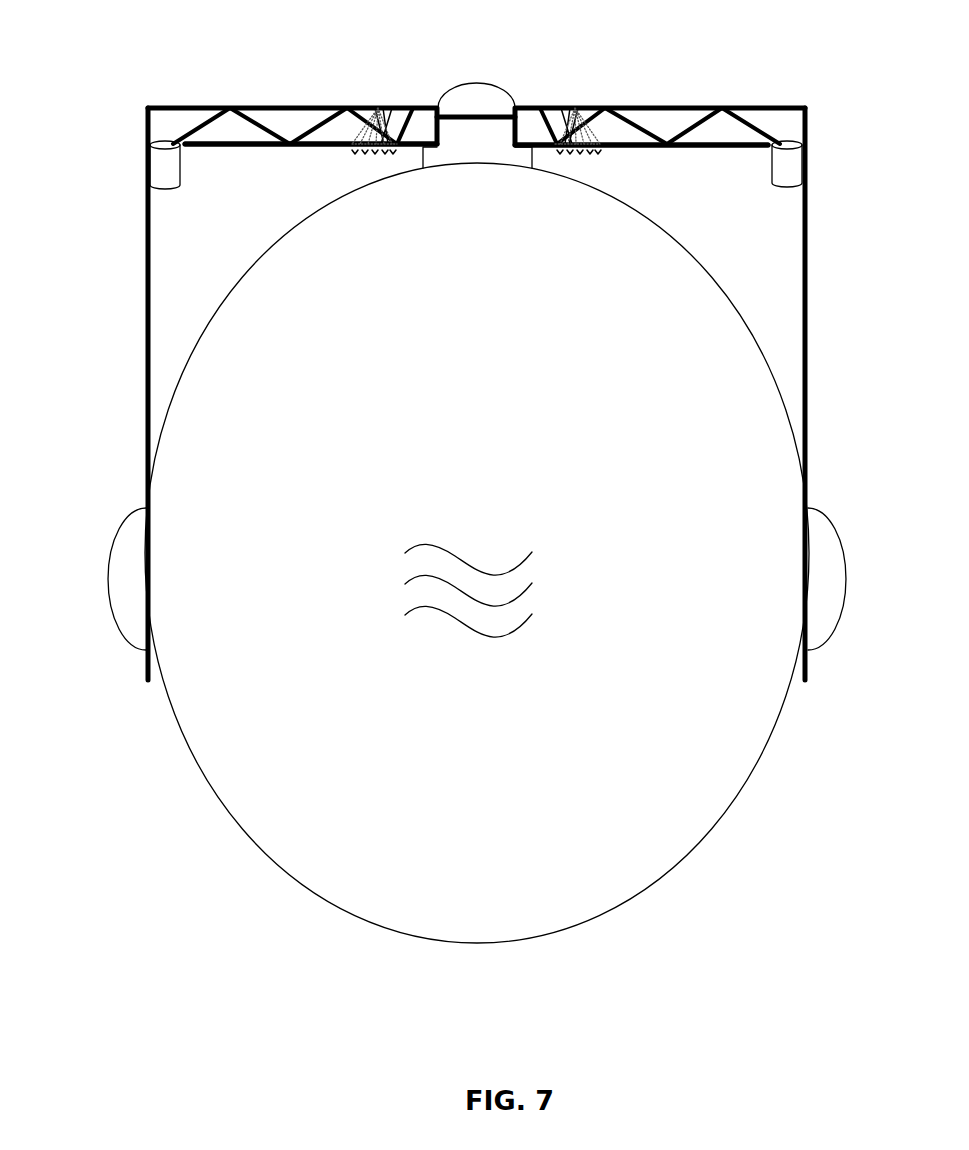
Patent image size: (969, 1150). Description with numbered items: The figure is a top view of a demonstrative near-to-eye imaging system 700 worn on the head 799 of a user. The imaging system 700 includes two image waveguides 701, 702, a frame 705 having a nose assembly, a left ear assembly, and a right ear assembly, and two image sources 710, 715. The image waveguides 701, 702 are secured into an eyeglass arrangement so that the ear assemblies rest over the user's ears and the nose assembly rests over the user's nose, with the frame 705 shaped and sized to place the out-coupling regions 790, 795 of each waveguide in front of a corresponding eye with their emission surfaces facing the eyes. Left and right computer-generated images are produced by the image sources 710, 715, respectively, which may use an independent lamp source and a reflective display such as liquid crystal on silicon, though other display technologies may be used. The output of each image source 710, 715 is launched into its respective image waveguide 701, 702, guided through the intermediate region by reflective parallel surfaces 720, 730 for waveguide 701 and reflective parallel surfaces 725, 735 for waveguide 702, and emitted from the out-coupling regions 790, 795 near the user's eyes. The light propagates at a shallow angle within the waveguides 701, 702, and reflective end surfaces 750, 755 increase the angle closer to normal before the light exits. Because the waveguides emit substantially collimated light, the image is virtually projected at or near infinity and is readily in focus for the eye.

The imaging system 700 is at (160, 101).
The image waveguide 701 is at (195, 118).
The image waveguide 702 is at (765, 120).
The frame 705 is at (145, 382).
The image source 710 is at (147, 184).
The image source 715 is at (803, 185).
The reflective parallel surface 720 is at (233, 146).
The reflective parallel surface 725 is at (715, 146).
The reflective parallel surface 730 is at (280, 107).
The reflective parallel surface 735 is at (670, 107).
The reflective end surface 750 is at (413, 107).
The reflective end surface 755 is at (540, 107).
The out-coupling region 790 is at (355, 151).
The out-coupling region 795 is at (597, 152).
The head 799 is at (477, 545).